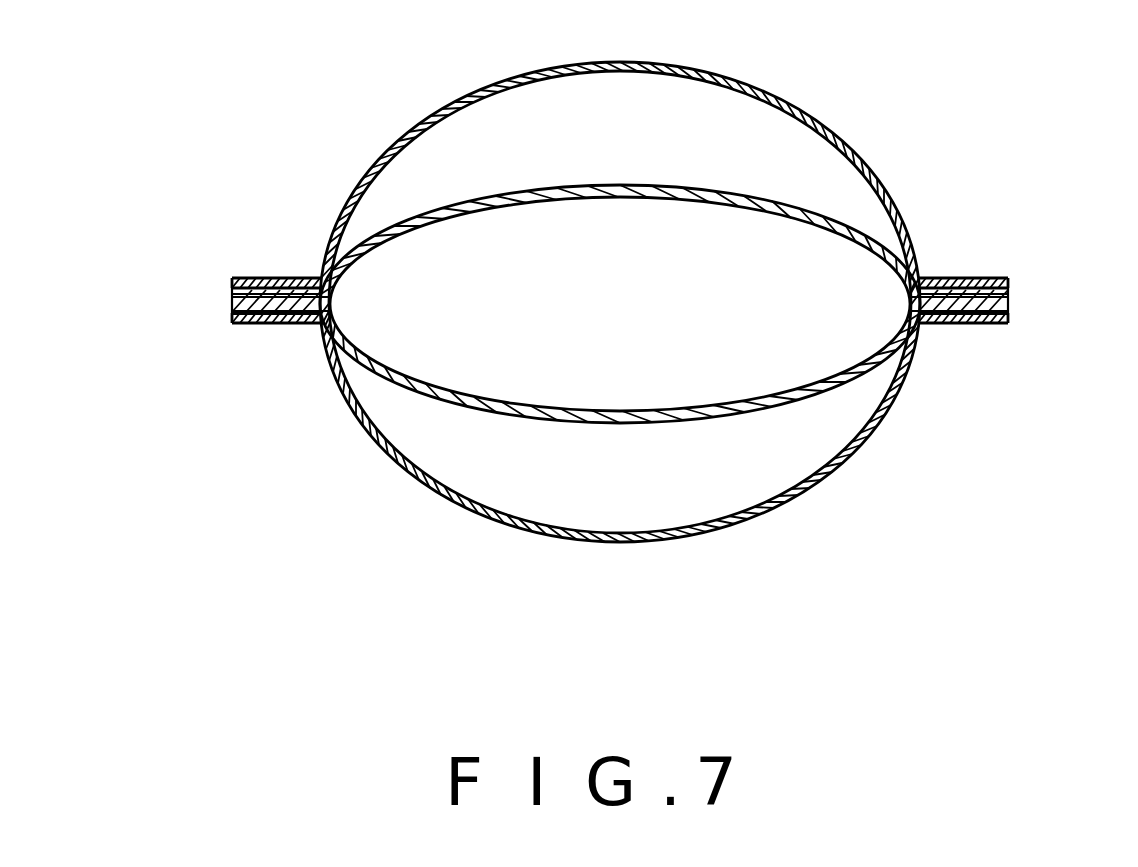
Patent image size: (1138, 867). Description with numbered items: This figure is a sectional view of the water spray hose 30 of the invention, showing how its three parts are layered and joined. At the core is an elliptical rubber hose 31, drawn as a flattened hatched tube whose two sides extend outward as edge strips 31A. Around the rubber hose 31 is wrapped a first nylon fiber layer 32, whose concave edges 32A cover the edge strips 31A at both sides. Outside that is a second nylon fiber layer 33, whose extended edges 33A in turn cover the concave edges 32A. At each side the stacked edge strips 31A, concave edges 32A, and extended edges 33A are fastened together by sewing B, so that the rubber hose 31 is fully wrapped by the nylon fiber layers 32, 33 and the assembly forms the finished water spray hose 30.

The water spray hose 30 is at (412, 74).
The second nylon fiber layer 33 is at (770, 90).
The first nylon fiber layer 32 is at (748, 520).
The elliptical rubber hose 31 is at (850, 235).
The extended edges 33A is at (238, 281).
The concave edges 32A is at (232, 312).
The edge strips 31A is at (292, 325).
The sewing B is at (262, 283).